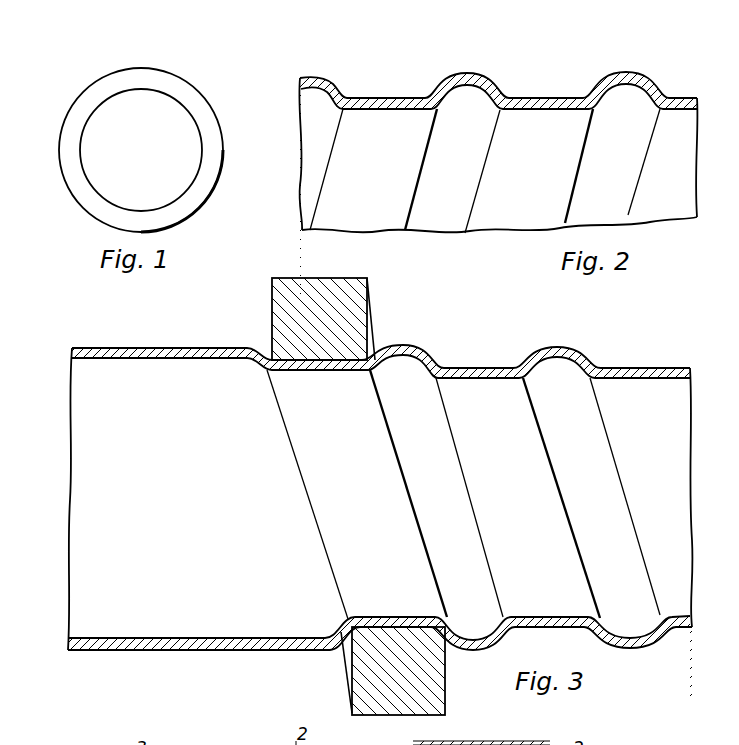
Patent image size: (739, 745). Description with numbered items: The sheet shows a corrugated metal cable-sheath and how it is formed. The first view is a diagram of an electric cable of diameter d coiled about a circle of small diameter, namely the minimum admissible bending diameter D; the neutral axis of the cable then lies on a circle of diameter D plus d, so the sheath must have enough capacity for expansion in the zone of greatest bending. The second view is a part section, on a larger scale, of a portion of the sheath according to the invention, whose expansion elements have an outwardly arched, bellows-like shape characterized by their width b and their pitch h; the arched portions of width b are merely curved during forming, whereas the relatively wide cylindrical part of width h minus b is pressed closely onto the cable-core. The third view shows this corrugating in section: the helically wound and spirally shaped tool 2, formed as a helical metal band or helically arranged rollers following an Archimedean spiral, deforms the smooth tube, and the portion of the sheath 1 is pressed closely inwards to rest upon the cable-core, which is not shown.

In FIG. 3, the pressed-in portion of the sheath 1 is at (477, 368).
In FIG. 3, the helically wound and spirally shaped tool 2 is at (317, 290).
In FIG. 1, the cable diameter d is at (117, 138).
In FIG. 1, the minimum admissible bending diameter D is at (197, 125).
In FIG. 2, the width of the expansion elements b is at (498, 109).
In FIG. 2, the pitch of the expansion elements h is at (594, 109).